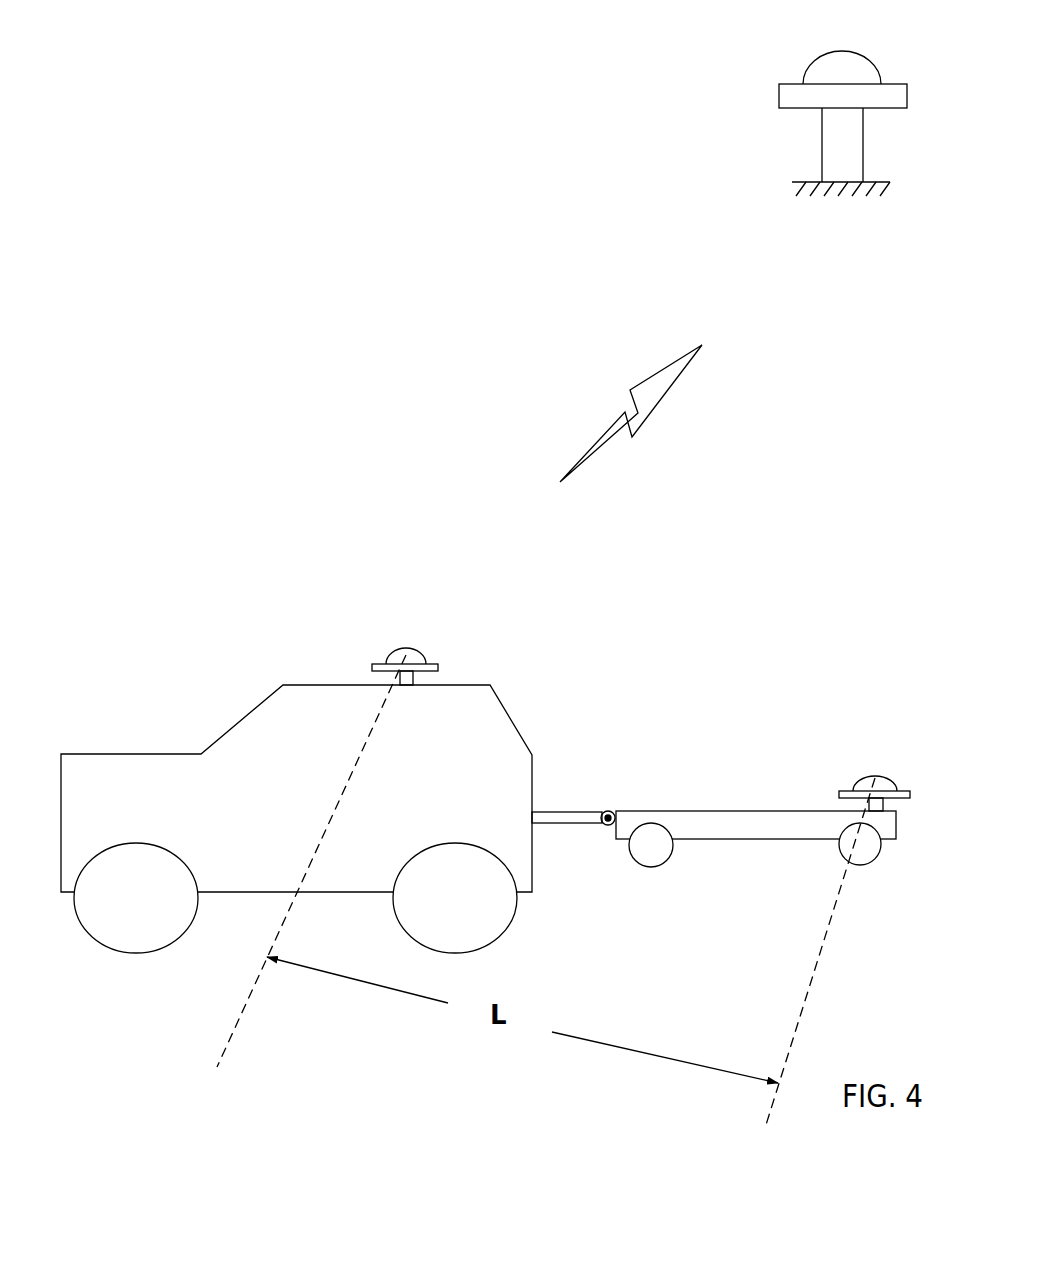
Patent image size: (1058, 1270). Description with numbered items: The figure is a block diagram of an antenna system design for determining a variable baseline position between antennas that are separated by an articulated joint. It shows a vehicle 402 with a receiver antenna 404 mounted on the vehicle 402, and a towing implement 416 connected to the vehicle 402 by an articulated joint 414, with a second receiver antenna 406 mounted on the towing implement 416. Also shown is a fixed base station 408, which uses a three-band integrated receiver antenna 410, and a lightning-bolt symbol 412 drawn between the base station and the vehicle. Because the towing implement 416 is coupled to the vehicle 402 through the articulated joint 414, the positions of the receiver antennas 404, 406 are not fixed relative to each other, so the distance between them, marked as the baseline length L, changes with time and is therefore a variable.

The vehicle 402 is at (518, 728).
The receiver antenna 404 is at (422, 653).
The receiver antenna 406 is at (883, 773).
The fixed base station 408 is at (772, 105).
The three-band integrated receiver antenna 410 is at (843, 40).
The wireless signal 412 is at (580, 437).
The articulated joint 414 is at (607, 807).
The towing implement 416 is at (700, 810).